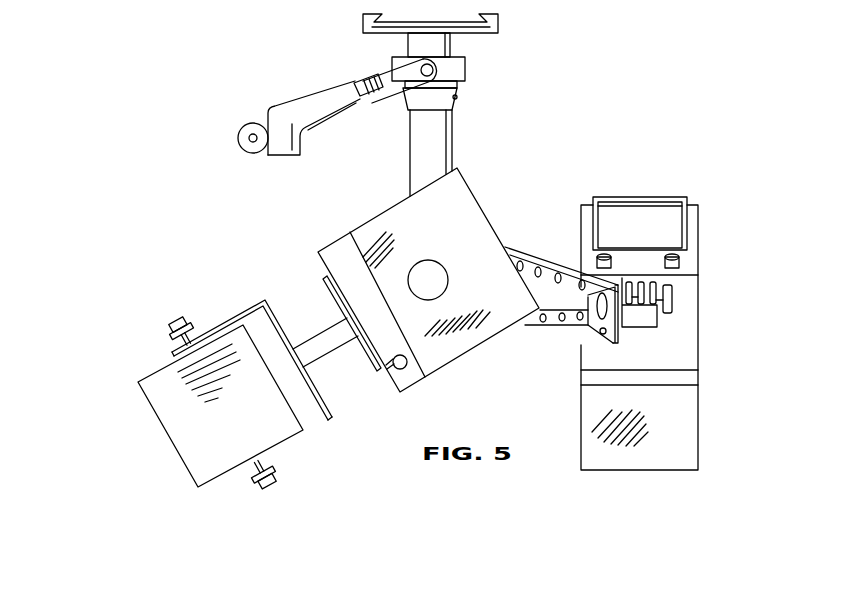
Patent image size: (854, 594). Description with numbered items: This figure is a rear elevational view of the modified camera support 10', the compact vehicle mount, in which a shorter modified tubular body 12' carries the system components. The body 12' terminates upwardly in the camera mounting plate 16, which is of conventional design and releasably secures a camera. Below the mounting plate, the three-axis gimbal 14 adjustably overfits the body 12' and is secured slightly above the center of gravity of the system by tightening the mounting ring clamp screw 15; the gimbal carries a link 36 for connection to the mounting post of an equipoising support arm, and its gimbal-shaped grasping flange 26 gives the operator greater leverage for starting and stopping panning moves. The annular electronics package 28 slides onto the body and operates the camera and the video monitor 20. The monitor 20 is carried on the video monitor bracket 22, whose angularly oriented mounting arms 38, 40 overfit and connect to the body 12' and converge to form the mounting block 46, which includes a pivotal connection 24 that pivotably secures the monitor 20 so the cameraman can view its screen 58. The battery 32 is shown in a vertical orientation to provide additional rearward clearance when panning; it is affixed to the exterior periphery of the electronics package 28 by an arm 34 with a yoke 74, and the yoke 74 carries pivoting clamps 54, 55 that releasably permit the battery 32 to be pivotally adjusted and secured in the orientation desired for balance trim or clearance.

The modified camera support 10' is at (515, 110).
The modified tubular body 12' is at (401, 153).
The gimbal 14 is at (327, 90).
The mounting ring clamp screw 15 is at (456, 97).
The camera mounting plate 16 is at (499, 25).
The video monitor 20 is at (700, 303).
The video monitor bracket 22 is at (561, 252).
The pivotal connection 24 is at (640, 308).
The grasping flange 26 is at (376, 108).
The electronics package 28 is at (463, 210).
The battery 32 is at (165, 433).
The arm 34 is at (305, 333).
The link 36 is at (293, 105).
The arm 38 is at (559, 263).
The arm 40 is at (532, 326).
The mounting block 46 is at (590, 318).
The pivoting clamp 54 is at (268, 485).
The pivoting clamp 55 is at (181, 322).
The screen 58 is at (629, 220).
The yoke 74 is at (318, 437).